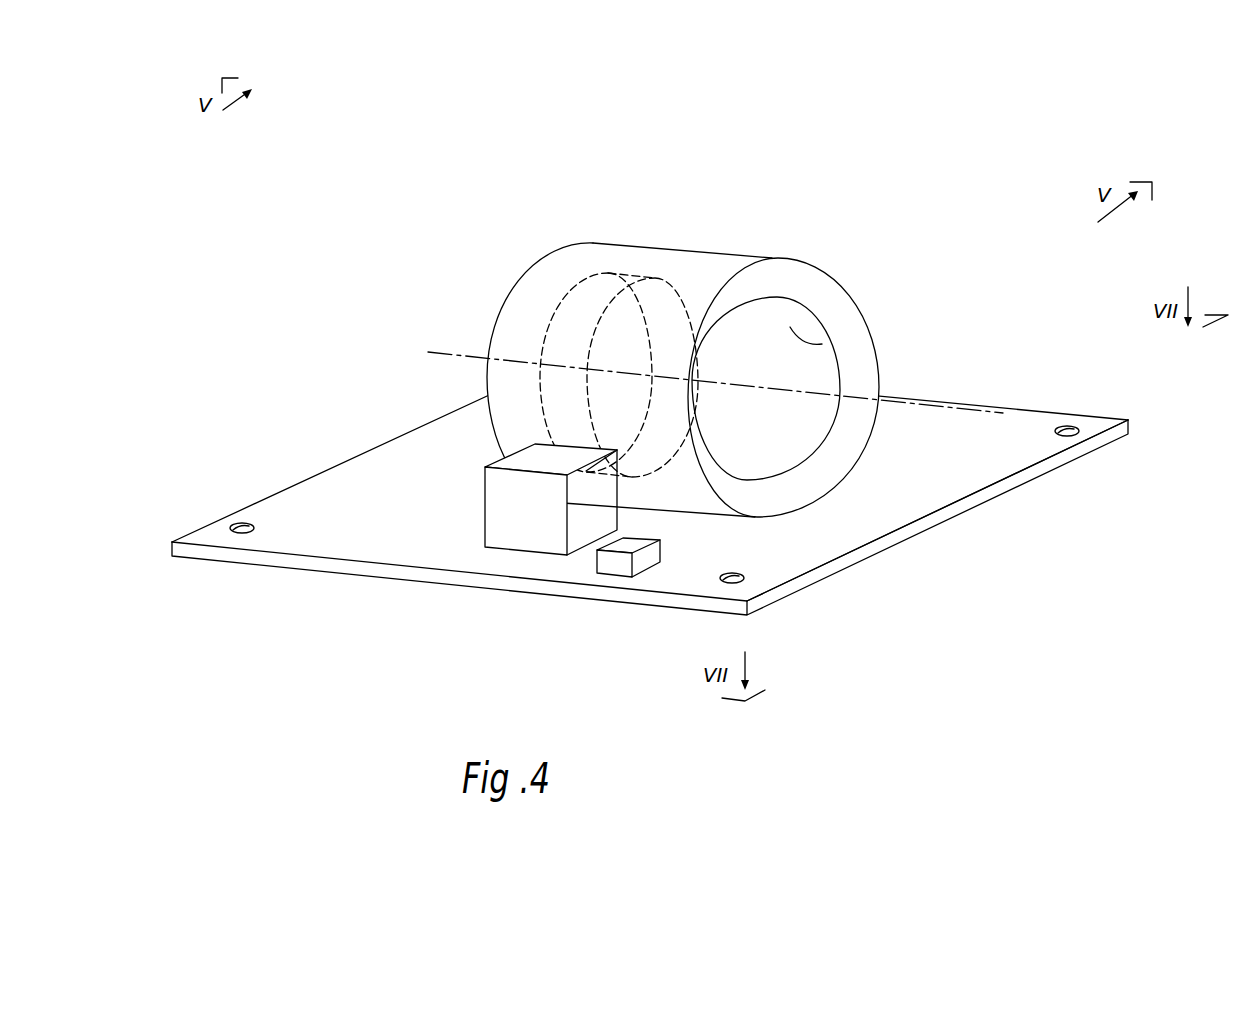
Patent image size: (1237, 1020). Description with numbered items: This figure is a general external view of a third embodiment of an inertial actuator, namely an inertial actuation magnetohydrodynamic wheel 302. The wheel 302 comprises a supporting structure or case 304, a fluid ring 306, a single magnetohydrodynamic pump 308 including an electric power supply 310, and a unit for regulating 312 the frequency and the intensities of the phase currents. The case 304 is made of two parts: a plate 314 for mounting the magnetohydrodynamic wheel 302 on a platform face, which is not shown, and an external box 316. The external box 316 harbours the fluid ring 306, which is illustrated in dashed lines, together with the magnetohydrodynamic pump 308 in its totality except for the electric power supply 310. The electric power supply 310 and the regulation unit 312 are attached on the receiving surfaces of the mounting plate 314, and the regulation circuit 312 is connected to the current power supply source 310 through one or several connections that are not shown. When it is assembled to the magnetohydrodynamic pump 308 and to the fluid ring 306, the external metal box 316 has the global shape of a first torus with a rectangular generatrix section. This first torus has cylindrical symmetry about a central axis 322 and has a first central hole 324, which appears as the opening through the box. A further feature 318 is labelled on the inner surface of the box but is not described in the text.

The inertial actuation magnetohydrodynamic wheel 302 is at (336, 182).
The supporting structure or case 304 is at (600, 255).
The fluid ring 306 is at (542, 279).
The magnetohydrodynamic pump 308 is at (528, 610).
The electric power supply 310 is at (503, 518).
The regulation unit 312 is at (645, 554).
The mounting plate 314 is at (843, 515).
The external box 316 is at (750, 493).
The inner surface 318 is at (833, 337).
The central axis 322 is at (447, 352).
The first central hole 324 is at (768, 315).